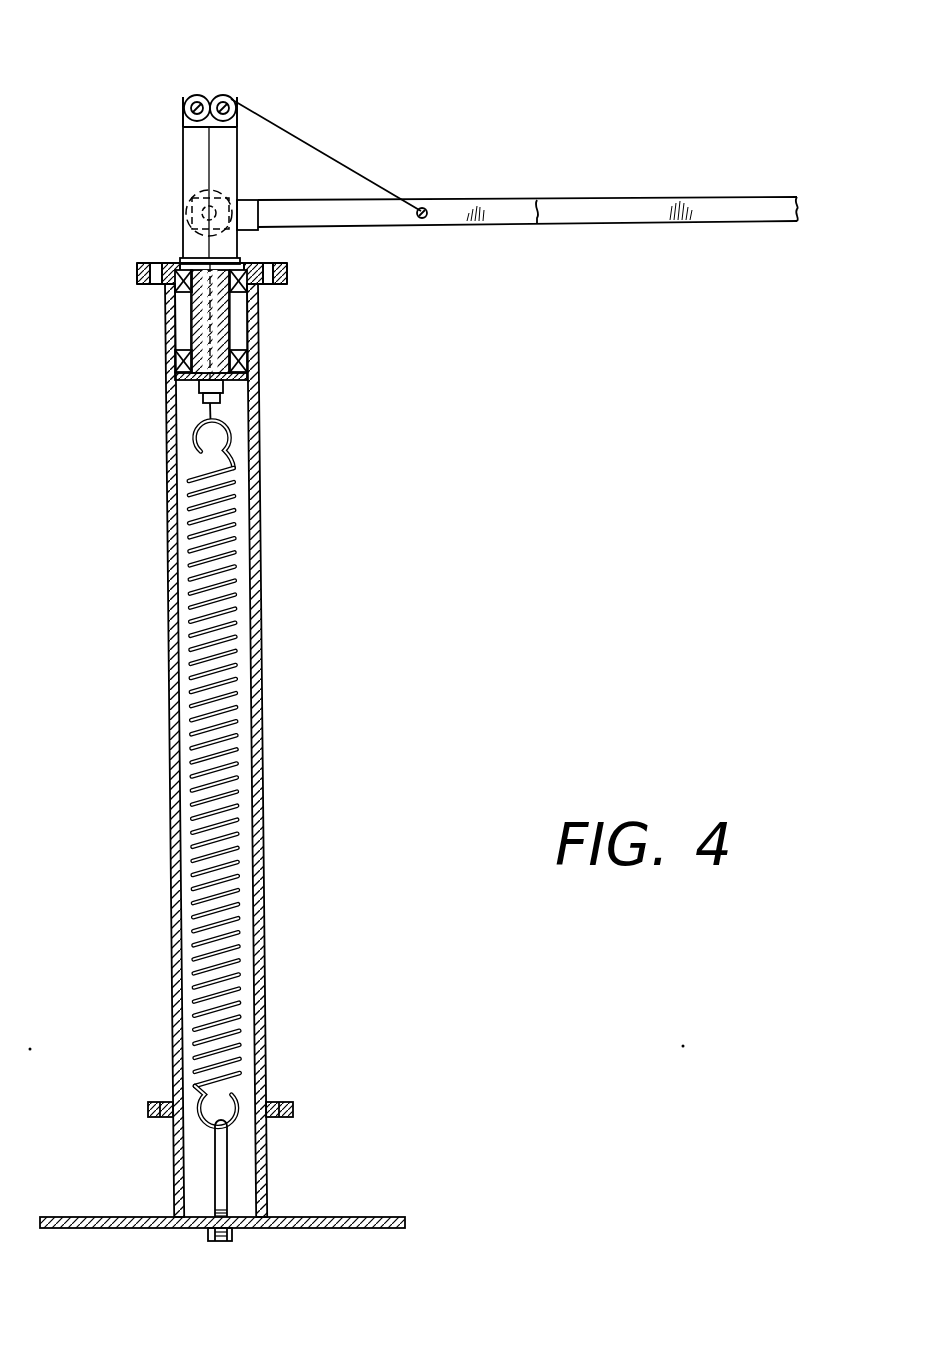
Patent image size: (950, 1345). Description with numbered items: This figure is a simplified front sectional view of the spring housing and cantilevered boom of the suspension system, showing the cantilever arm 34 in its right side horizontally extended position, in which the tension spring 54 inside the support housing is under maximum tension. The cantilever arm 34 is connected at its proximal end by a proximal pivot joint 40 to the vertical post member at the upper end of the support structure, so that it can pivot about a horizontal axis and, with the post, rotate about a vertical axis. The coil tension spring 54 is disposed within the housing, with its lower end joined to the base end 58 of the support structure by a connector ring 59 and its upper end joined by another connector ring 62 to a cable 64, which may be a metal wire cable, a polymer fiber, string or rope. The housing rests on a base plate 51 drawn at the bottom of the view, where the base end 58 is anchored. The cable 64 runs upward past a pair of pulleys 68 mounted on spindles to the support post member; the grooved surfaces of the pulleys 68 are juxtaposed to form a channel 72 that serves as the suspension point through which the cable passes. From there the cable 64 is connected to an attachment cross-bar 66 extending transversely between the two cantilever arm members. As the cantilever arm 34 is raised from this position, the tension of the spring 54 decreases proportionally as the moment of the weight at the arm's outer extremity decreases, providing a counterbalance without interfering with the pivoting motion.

The cantilever arm 34 is at (618, 200).
The proximal pivot joint 40 is at (190, 233).
The base plate 51 is at (343, 1215).
The tension spring 54 is at (232, 688).
The base end 58 is at (247, 1107).
The connector ring 59 is at (198, 1103).
The connector ring 62 is at (231, 432).
The cable 64 is at (349, 163).
The attachment cross-bar 66 is at (422, 219).
The pulleys 68 is at (188, 97).
The channel 72 is at (209, 92).